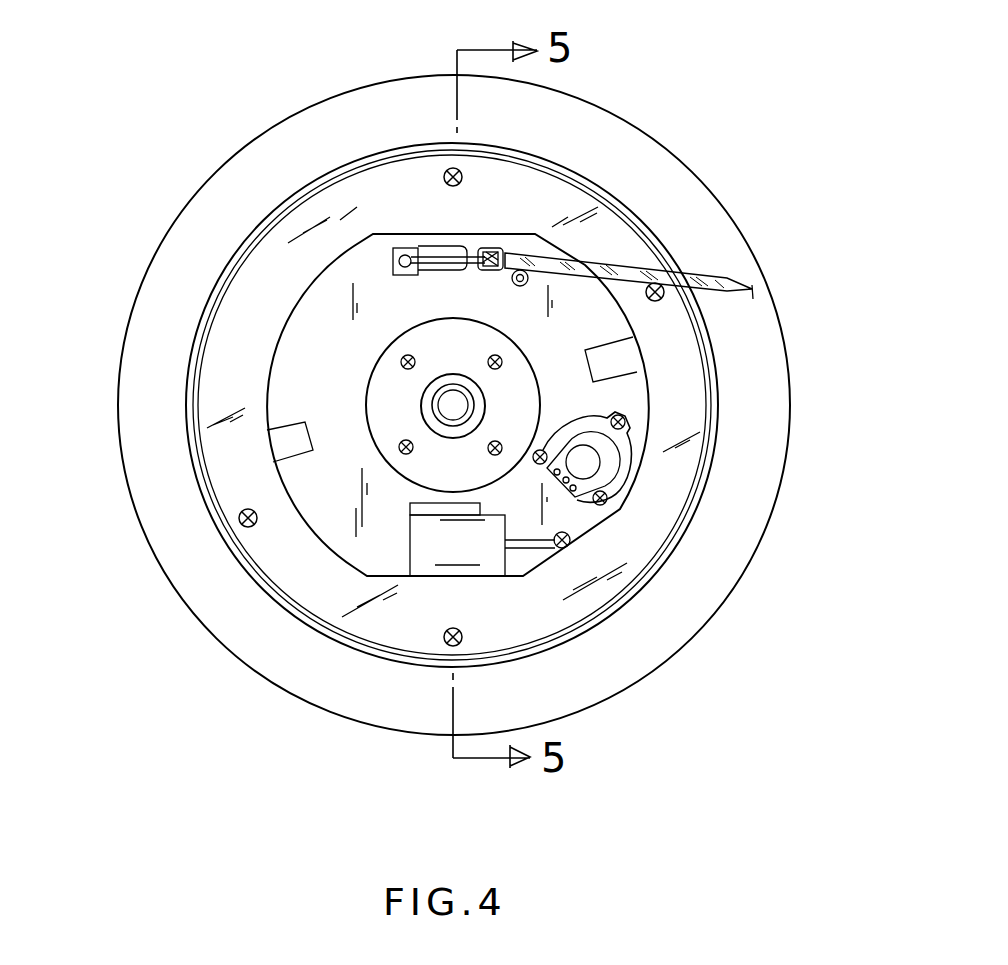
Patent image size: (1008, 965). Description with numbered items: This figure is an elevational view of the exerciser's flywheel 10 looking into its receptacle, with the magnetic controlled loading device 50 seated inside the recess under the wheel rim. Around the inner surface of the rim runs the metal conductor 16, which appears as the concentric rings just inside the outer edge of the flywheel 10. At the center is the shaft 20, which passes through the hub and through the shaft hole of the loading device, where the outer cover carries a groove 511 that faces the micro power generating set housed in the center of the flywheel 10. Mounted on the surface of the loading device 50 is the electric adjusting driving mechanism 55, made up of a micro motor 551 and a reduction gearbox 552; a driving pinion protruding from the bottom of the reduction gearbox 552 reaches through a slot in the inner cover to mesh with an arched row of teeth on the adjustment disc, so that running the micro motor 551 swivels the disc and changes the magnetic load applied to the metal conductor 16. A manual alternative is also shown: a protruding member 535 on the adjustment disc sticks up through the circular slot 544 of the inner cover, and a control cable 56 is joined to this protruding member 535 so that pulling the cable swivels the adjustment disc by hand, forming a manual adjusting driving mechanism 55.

The flywheel 10 is at (263, 160).
The metal conductor 16 is at (243, 242).
The shaft 20 is at (450, 396).
The magnetic controlled loading device 50 is at (622, 390).
The groove 511 is at (397, 390).
The protruding member 535 is at (410, 248).
The circular slot 544 is at (438, 248).
The electric adjusting driving mechanism 55 is at (706, 532).
The micro motor 551 is at (477, 548).
The reduction gearbox 552 is at (575, 507).
The control cable 56 is at (626, 268).